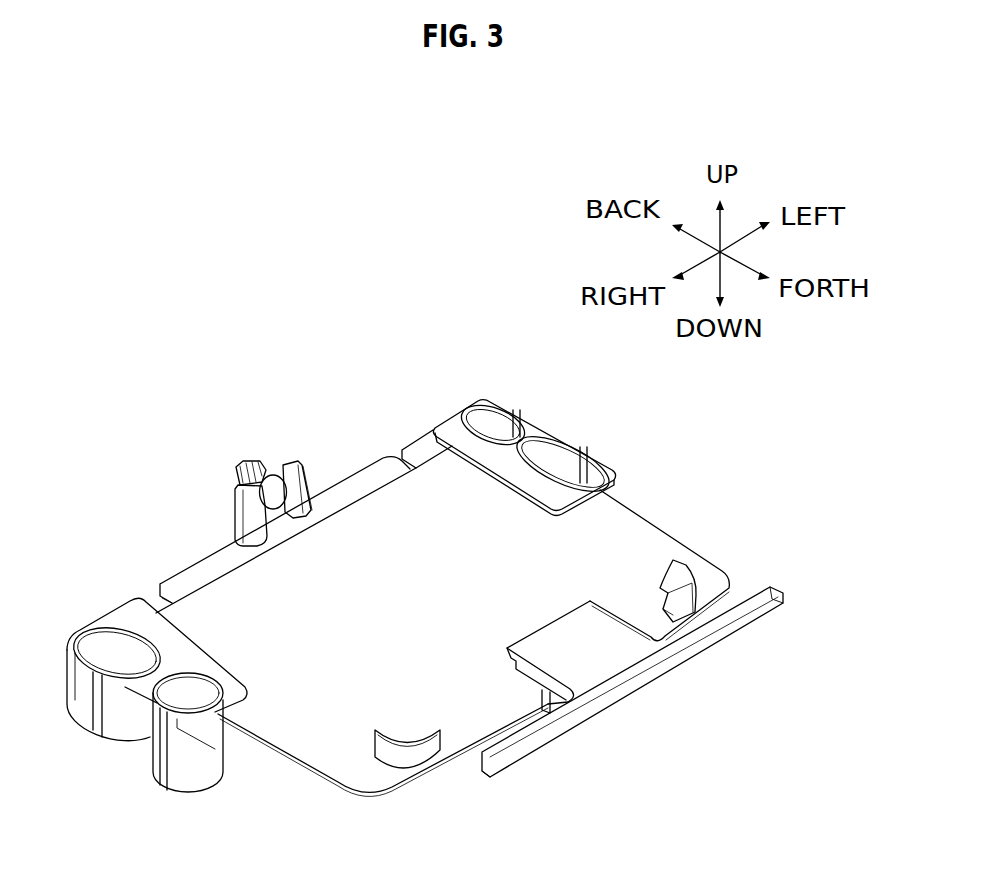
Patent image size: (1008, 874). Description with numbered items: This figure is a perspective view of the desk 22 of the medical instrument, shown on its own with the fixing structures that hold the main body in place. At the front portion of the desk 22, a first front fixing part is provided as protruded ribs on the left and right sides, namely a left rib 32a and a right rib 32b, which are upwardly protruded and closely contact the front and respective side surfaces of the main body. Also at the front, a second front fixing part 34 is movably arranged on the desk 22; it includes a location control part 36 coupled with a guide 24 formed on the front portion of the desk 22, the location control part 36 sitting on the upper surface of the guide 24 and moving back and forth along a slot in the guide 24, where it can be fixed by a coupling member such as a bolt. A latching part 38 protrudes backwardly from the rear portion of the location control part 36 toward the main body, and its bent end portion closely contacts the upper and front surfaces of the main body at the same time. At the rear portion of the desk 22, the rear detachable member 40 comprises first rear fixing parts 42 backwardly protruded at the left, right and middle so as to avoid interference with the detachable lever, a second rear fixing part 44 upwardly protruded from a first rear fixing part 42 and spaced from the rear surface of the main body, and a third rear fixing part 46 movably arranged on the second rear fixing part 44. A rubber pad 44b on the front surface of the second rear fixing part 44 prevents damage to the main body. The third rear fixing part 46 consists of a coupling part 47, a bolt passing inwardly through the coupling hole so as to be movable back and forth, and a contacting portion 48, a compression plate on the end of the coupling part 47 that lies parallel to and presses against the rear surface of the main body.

The desk 22 is at (642, 530).
The guide 24 is at (548, 700).
The left rib 32a is at (683, 570).
The right rib 32b is at (420, 757).
The second front fixing part 34 is at (637, 683).
The location control part 36 is at (733, 635).
The latching part 38 is at (552, 630).
The rear detachable member 40 is at (222, 448).
The first rear fixing part 42 is at (207, 570).
The second rear fixing part 44 is at (237, 507).
The rubber pad 44b is at (322, 468).
The third rear fixing part 46 is at (310, 375).
The coupling part 47 is at (240, 460).
The contacting portion 48 is at (285, 462).